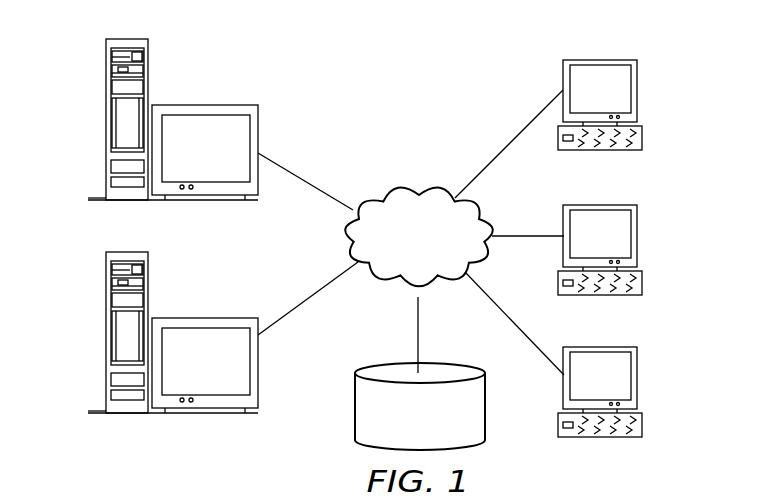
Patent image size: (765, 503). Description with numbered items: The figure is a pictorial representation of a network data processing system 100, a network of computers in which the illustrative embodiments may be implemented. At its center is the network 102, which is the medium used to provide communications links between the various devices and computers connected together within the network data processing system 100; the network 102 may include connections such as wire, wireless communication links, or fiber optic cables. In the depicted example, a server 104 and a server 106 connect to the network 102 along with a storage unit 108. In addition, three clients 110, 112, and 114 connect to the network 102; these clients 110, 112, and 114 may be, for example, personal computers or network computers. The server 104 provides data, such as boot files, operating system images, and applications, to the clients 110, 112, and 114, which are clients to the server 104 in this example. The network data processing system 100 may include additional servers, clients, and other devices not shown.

The network data processing system 100 is at (470, 80).
The network 102 is at (391, 184).
The server 104 is at (106, 122).
The server 106 is at (106, 335).
The storage unit 108 is at (355, 418).
The client 110 is at (637, 90).
The client 112 is at (637, 236).
The client 114 is at (637, 378).